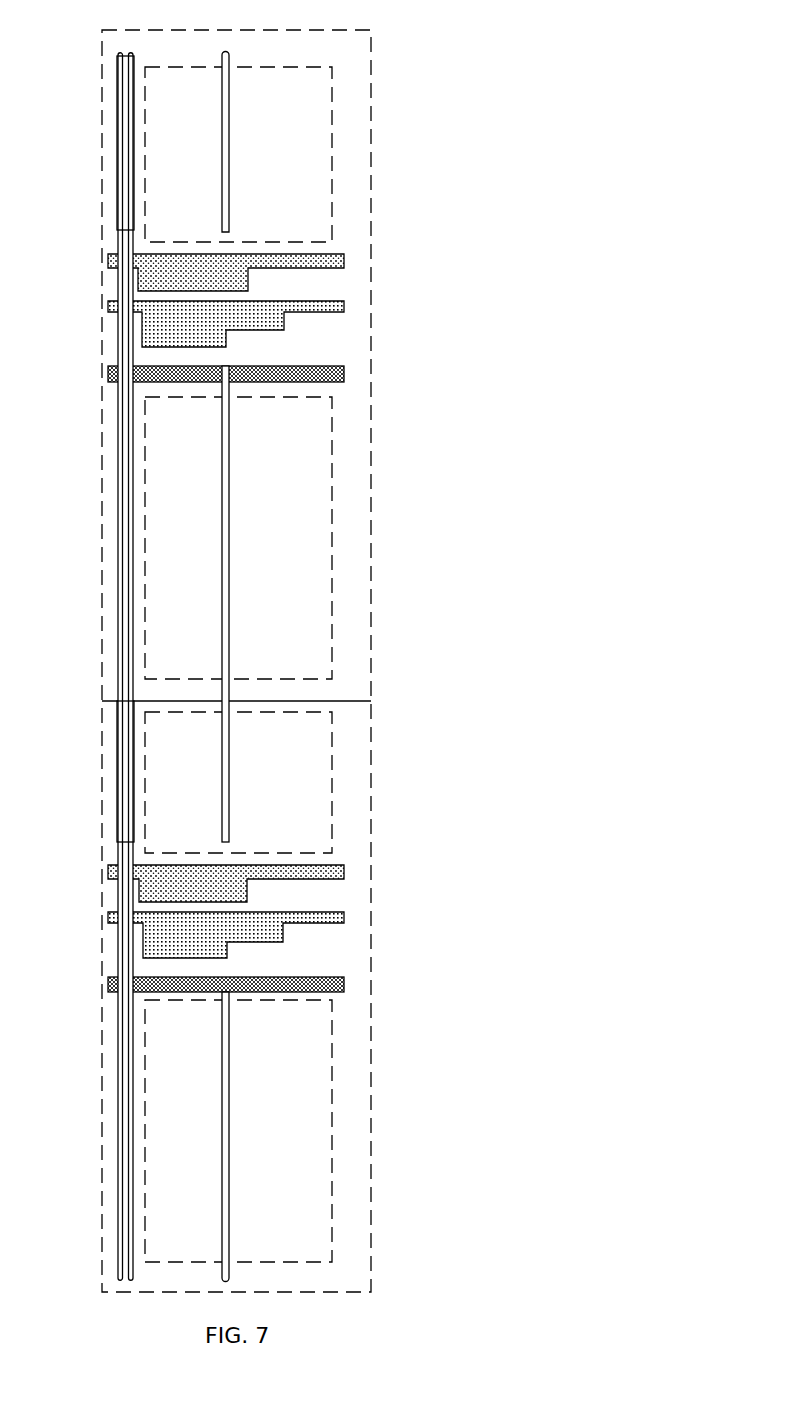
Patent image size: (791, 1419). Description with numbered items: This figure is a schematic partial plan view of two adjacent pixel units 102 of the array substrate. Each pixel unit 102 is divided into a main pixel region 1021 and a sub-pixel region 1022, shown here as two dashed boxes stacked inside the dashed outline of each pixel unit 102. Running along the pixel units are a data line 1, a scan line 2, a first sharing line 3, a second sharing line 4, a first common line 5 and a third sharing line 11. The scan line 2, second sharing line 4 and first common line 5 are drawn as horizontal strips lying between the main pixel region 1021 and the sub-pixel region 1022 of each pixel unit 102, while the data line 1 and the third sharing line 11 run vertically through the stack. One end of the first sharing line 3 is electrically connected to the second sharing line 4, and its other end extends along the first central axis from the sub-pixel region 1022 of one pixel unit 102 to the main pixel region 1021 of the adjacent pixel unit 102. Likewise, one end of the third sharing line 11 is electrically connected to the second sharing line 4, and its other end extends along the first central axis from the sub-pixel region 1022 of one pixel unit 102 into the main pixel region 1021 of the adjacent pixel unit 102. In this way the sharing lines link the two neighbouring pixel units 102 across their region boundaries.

The data line 1 is at (126, 159).
The first sharing line 3 is at (118, 203).
The first common line 5 is at (108, 258).
The scan line 2 is at (108, 305).
The second sharing line 4 is at (108, 369).
The third sharing line 11 is at (227, 152).
The pixel unit 102 is at (371, 285).
The main pixel region 1021 is at (332, 172).
The sub-pixel region 1022 is at (332, 587).